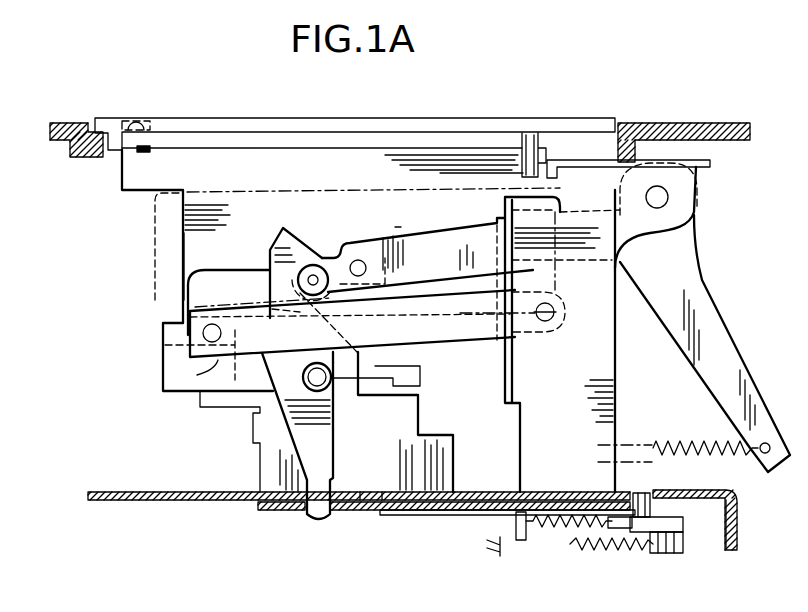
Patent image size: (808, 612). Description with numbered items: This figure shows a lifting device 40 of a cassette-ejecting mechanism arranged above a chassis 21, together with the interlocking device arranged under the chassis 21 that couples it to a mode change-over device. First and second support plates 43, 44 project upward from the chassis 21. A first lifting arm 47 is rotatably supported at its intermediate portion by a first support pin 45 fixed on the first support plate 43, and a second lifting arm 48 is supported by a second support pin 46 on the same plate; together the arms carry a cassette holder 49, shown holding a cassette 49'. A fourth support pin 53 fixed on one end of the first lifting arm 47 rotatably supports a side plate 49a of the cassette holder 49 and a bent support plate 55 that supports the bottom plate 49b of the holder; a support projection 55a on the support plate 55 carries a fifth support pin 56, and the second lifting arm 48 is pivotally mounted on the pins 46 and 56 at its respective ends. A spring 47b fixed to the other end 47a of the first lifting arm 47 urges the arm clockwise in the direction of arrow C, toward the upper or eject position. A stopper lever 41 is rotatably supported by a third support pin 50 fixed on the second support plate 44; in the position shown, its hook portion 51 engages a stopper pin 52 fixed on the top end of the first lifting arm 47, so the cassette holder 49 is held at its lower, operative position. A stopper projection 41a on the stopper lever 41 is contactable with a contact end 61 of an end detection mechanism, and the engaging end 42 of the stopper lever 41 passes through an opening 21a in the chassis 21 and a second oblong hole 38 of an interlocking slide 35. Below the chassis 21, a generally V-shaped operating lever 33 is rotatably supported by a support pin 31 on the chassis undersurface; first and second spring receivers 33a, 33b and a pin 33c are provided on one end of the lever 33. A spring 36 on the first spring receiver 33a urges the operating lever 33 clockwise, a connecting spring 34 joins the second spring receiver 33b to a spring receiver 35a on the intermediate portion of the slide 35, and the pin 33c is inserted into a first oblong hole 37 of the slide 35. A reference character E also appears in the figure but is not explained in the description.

The chassis 21 is at (193, 492).
The opening 21a is at (378, 496).
The support pin 31 is at (678, 492).
The operating lever 33 is at (677, 520).
The first spring receiver 33a is at (672, 551).
The second spring receiver 33b is at (632, 529).
The pin 33c is at (655, 487).
The connecting spring 34 is at (545, 528).
The interlocking slide 35 is at (423, 516).
The spring receiver 35a is at (514, 528).
The spring 36 is at (605, 550).
The first oblong hole 37 is at (728, 505).
The second oblong hole 38 is at (366, 506).
The lifting device 40 is at (620, 319).
The stopper lever 41 is at (300, 428).
The stopper projection 41a is at (272, 309).
The engaging end 42 is at (319, 522).
The first support plate 43 is at (604, 378).
The second support plate 44 is at (408, 422).
The first support pin 45 is at (668, 198).
The second support pin 46 is at (556, 313).
The first lifting arm 47 is at (448, 242).
The another end of first lifting arm 47a is at (730, 358).
The spring 47b is at (700, 445).
The second lifting arm 48 is at (438, 338).
The cassette holder 49 is at (146, 236).
The cassette 49' is at (170, 218).
The side plate 49a is at (182, 263).
The bottom plate 49b is at (185, 316).
The third support pin 50 is at (333, 381).
The hook portion 51 is at (313, 274).
The stopper pin 52 is at (294, 246).
The fourth support pin 53 is at (358, 259).
The support plate 55 is at (212, 278).
The support projection 55a is at (197, 355).
The fifth support pin 56 is at (197, 375).
The contact end 61 is at (176, 390).
The reference line E is at (300, 191).
The arrow C is at (398, 227).